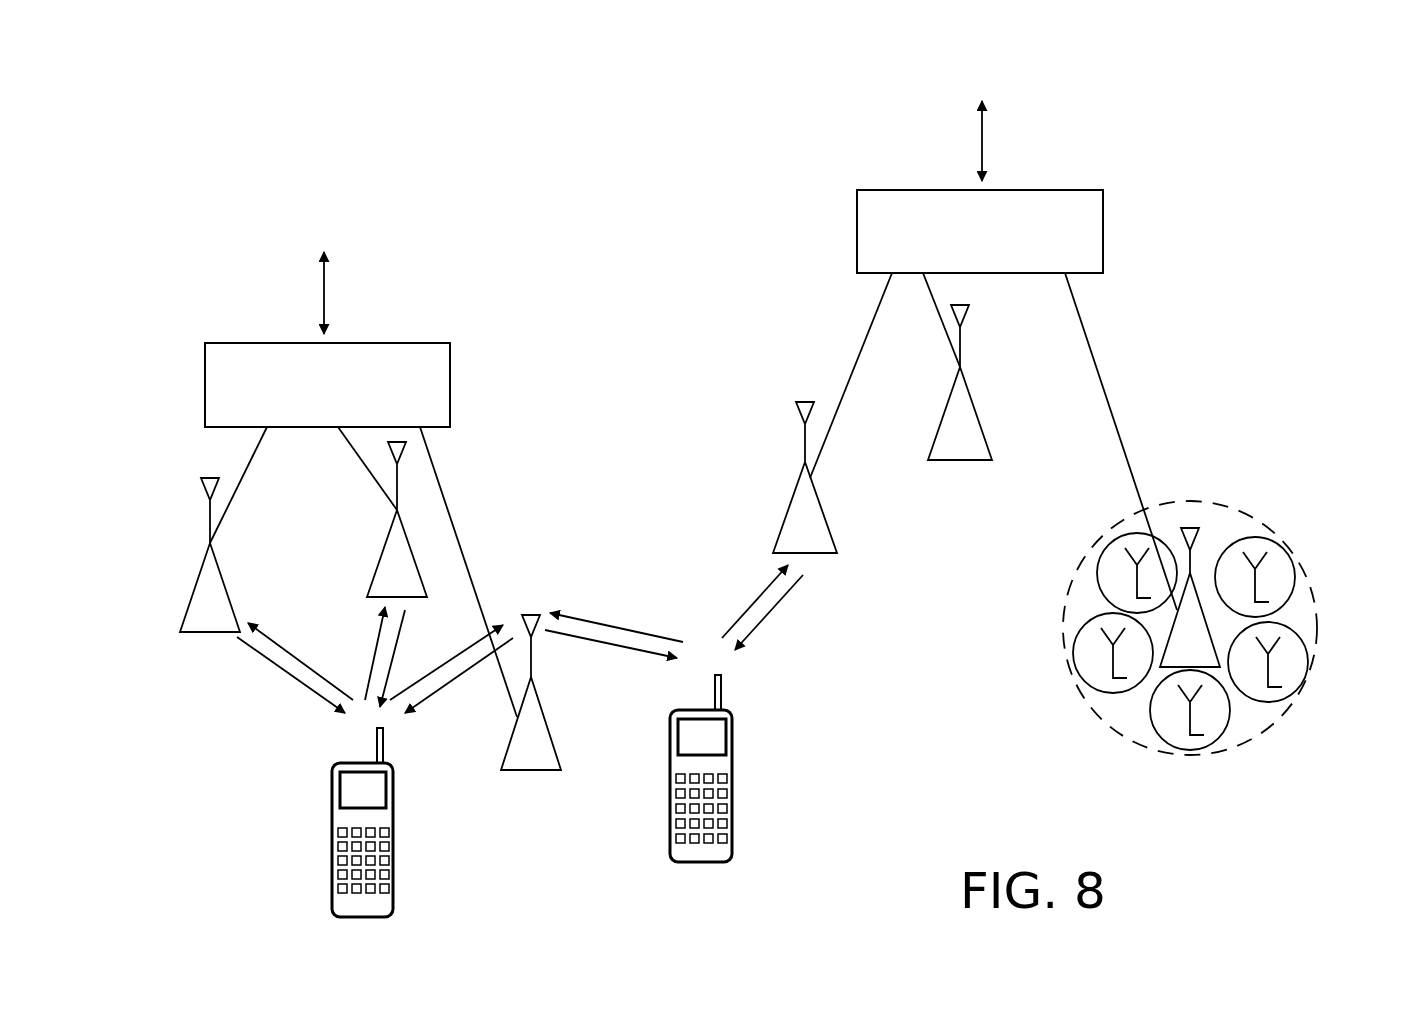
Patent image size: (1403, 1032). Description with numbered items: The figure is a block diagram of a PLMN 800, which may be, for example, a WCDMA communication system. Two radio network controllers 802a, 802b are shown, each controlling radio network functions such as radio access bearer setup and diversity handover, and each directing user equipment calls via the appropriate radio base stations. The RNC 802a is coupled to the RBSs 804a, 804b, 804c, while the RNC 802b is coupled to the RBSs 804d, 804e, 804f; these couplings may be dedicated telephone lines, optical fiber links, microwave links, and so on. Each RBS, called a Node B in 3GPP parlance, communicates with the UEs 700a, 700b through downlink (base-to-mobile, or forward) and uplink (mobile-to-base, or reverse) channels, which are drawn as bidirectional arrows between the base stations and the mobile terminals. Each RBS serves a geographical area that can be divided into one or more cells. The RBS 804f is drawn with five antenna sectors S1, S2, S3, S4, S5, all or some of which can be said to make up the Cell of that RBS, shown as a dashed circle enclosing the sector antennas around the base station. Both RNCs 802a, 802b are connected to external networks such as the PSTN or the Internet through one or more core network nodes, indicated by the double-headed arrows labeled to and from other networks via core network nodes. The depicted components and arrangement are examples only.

The PLMN 800 is at (641, 302).
The radio network controller 802a is at (551, 402).
The radio network controller 802b is at (1210, 252).
The radio base station 804a is at (205, 560).
The radio base station 804b is at (385, 553).
The radio base station 804c is at (644, 692).
The radio base station 804d is at (928, 496).
The radio base station 804e is at (1073, 377).
The radio base station 804f is at (1201, 607).
The user equipment 700a is at (505, 823).
The user equipment 700b is at (845, 767).
The antenna sector S1 is at (1273, 537).
The antenna sector S2 is at (1298, 693).
The antenna sector S3 is at (1235, 733).
The antenna sector S4 is at (1072, 655).
The antenna sector S5 is at (1090, 570).
The cell Cell is at (1306, 580).